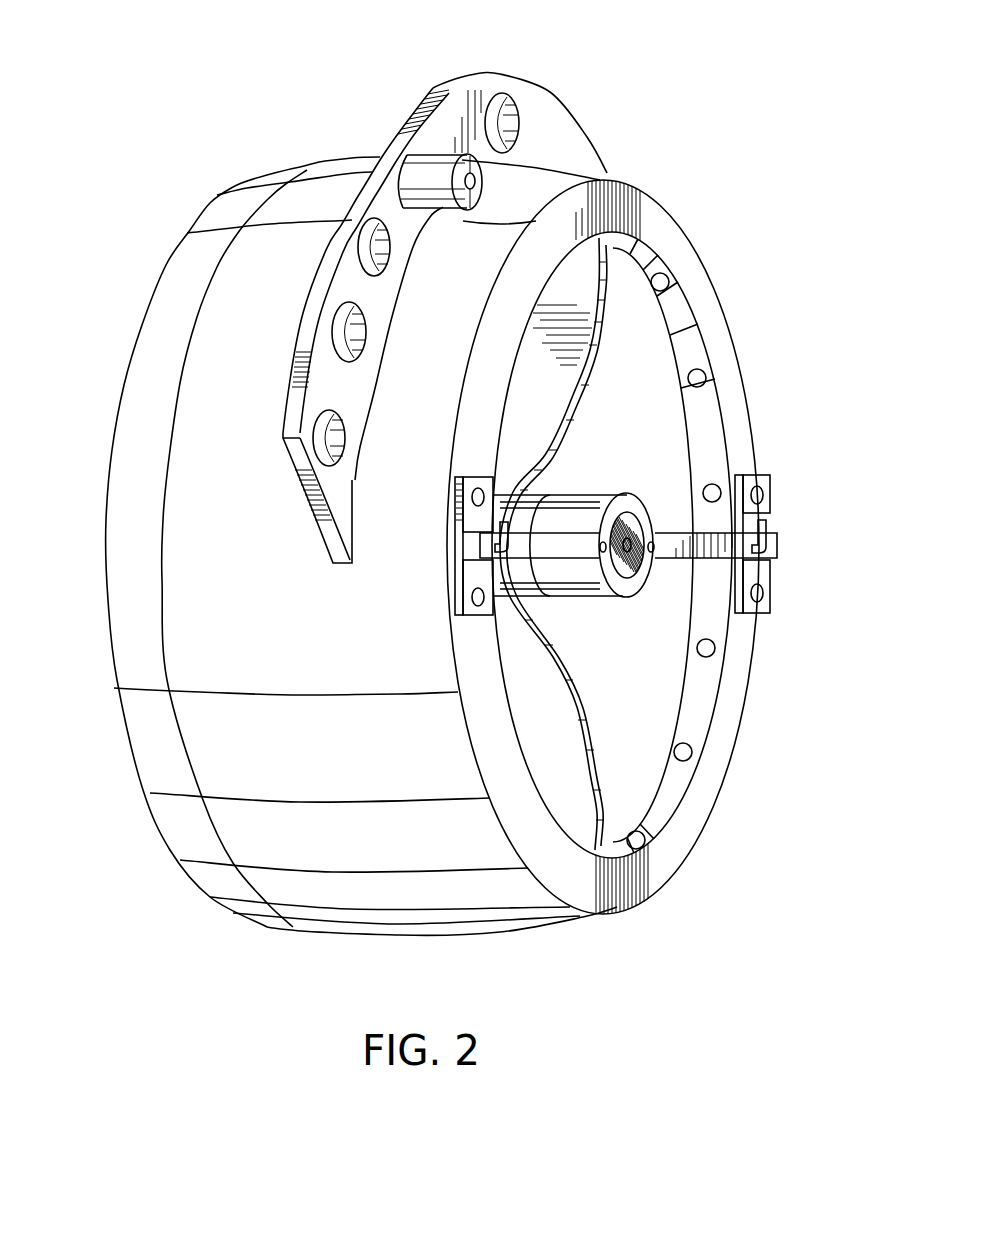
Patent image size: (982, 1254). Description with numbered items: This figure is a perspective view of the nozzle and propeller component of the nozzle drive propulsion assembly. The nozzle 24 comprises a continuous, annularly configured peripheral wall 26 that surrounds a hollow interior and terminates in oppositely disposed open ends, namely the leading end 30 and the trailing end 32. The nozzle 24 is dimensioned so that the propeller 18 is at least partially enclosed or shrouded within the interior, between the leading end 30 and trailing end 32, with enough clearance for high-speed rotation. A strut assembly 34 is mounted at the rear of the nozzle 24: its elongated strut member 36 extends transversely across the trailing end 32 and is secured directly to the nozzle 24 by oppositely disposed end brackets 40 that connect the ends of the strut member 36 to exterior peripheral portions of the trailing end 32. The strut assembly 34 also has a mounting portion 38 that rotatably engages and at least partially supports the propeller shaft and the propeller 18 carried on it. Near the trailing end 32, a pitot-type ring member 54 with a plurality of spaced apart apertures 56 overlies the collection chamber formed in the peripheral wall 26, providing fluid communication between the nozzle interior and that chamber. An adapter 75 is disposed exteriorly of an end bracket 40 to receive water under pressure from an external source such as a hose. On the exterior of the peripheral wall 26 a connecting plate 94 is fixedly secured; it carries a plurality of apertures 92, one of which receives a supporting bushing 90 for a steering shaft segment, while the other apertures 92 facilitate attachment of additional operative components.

The propeller 18 is at (582, 306).
The nozzle 24 is at (548, 944).
The peripheral wall 26 is at (244, 622).
The leading end 30 is at (165, 850).
The trailing end 32 is at (658, 804).
The strut assembly 34 is at (644, 476).
The strut member 36 is at (678, 553).
The mounting portion 38 is at (571, 583).
The end brackets 40 is at (768, 488).
The ring member 54 is at (660, 258).
The apertures 56 is at (665, 282).
The adapter 75 is at (768, 546).
The supporting bushing 90 is at (410, 170).
The apertures 92 is at (510, 118).
The connecting plate 94 is at (440, 88).